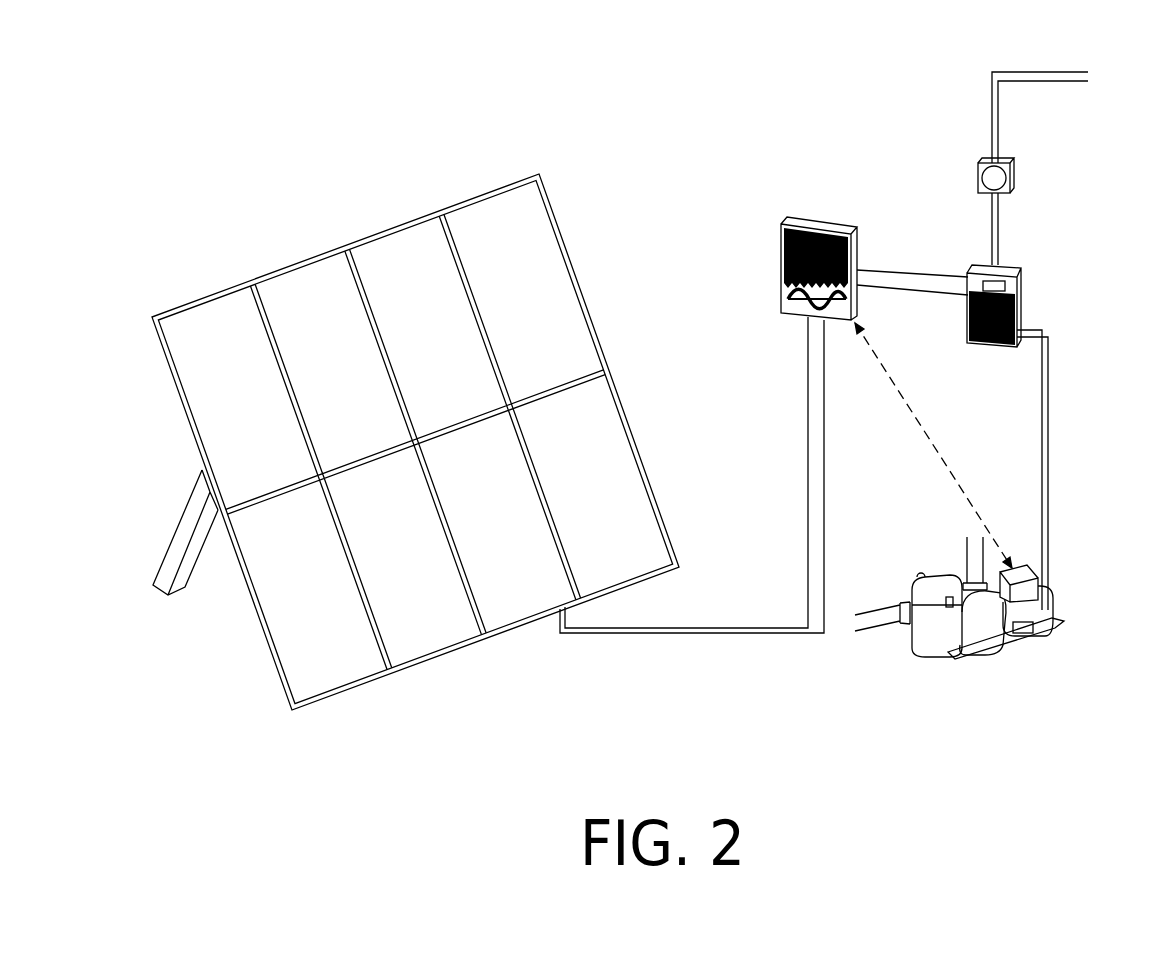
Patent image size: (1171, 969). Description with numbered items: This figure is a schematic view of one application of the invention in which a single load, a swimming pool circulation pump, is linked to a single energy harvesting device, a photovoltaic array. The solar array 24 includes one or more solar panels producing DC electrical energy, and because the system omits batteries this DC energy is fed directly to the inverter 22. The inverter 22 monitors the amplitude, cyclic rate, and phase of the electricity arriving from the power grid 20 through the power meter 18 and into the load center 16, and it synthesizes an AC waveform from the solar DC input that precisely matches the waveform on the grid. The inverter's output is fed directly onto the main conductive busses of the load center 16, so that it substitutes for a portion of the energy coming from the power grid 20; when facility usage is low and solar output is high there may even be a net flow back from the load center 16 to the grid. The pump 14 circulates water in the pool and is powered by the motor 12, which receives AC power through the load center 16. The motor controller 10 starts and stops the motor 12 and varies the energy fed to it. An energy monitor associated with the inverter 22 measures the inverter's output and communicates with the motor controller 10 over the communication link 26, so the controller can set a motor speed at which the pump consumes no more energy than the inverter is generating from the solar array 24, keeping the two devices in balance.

The motor controller 10 is at (1020, 577).
The motor 12 is at (1050, 633).
The pump 14 is at (968, 625).
The load center 16 is at (1005, 283).
The power meter 18 is at (1012, 187).
The power grid 20 is at (1022, 80).
The inverter 22 is at (820, 223).
The solar array 24 is at (415, 270).
The communication link 26 is at (945, 460).